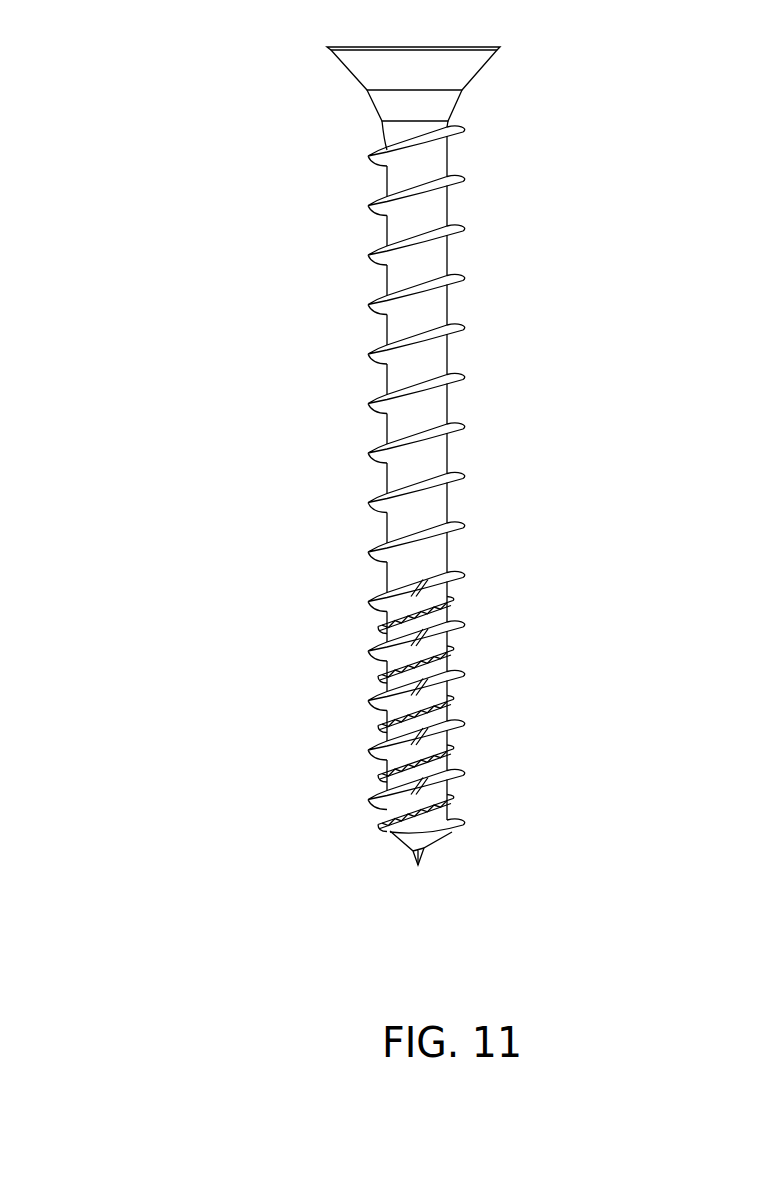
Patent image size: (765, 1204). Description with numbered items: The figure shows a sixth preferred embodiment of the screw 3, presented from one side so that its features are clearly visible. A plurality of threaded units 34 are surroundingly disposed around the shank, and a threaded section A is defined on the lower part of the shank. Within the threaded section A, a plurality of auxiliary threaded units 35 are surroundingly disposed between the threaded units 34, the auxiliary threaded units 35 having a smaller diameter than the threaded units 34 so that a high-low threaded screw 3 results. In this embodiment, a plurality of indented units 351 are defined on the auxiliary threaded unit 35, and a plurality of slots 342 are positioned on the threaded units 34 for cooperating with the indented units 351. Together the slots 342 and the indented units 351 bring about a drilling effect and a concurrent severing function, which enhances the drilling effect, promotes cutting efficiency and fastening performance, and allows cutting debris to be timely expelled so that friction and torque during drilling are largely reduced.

The screw 3 is at (150, 123).
The threaded units 34 is at (306, 125).
The slots 342 is at (414, 596).
The auxiliary threaded units 35 is at (450, 657).
The indented units 351 is at (453, 705).
The threaded section A is at (372, 592).